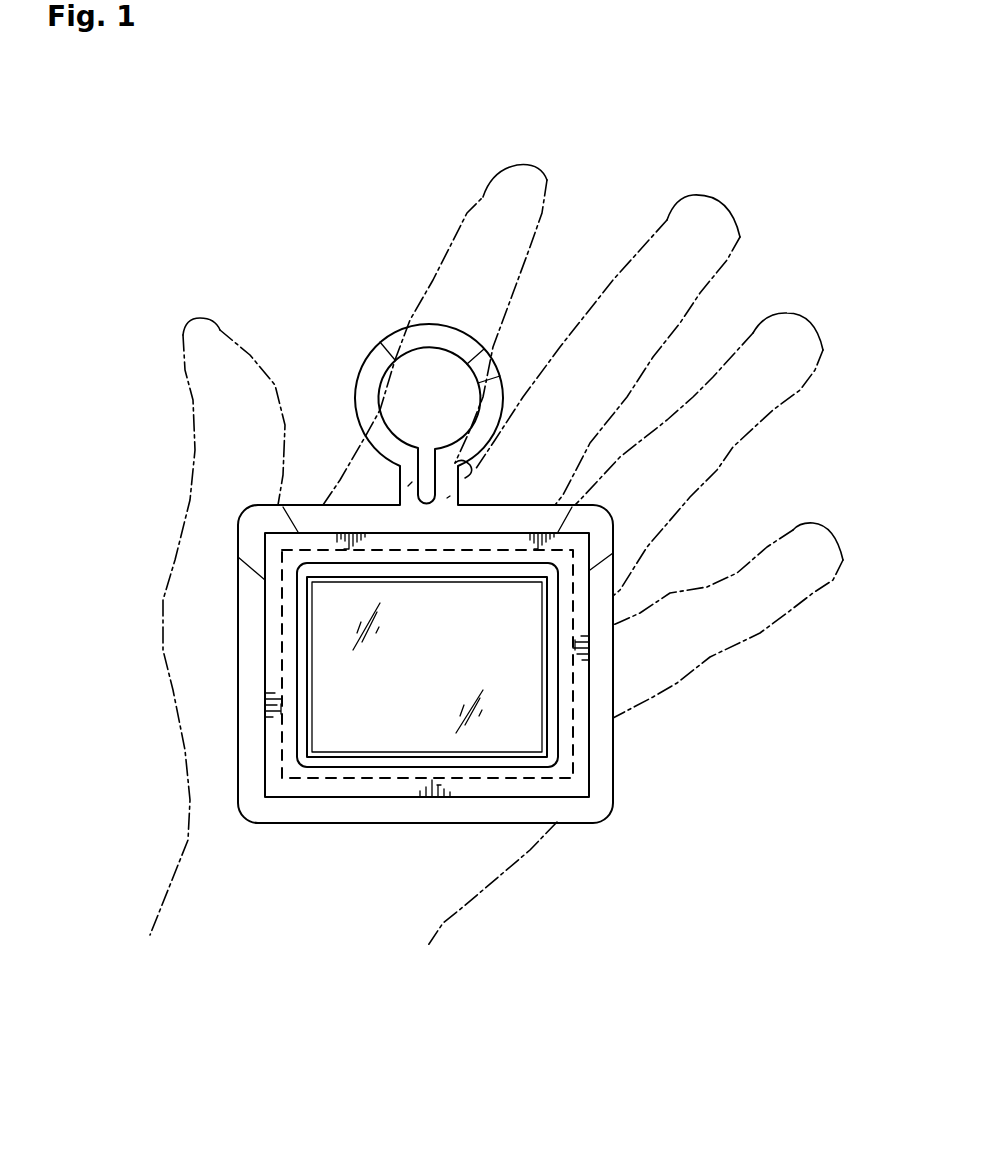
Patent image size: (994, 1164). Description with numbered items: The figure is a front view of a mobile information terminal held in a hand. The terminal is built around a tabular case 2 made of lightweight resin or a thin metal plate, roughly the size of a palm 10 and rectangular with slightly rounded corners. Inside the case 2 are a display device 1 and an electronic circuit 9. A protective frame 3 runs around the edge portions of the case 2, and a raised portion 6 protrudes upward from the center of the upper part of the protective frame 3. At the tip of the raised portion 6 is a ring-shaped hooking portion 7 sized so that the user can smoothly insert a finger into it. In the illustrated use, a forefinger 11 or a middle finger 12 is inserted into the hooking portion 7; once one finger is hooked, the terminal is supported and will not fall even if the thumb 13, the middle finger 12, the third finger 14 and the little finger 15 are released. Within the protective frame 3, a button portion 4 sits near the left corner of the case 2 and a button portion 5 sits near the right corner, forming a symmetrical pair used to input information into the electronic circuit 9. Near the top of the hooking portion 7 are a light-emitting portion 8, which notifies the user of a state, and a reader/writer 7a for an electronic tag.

The display device 1 is at (532, 737).
The case 2 is at (380, 788).
The protective frame 3 is at (607, 702).
The button portion 4 is at (250, 527).
The button portion 5 is at (603, 527).
The raised portion 6 is at (447, 498).
The hooking portion 7 is at (367, 377).
The reader/writer 7a is at (483, 365).
The light-emitting portion 8 is at (418, 335).
The electronic circuit 9 is at (573, 778).
The palm 10 is at (493, 850).
The forefinger 11 is at (523, 162).
The middle finger 12 is at (693, 195).
The thumb 13 is at (250, 353).
The third finger 14 is at (813, 327).
The little finger 15 is at (813, 523).